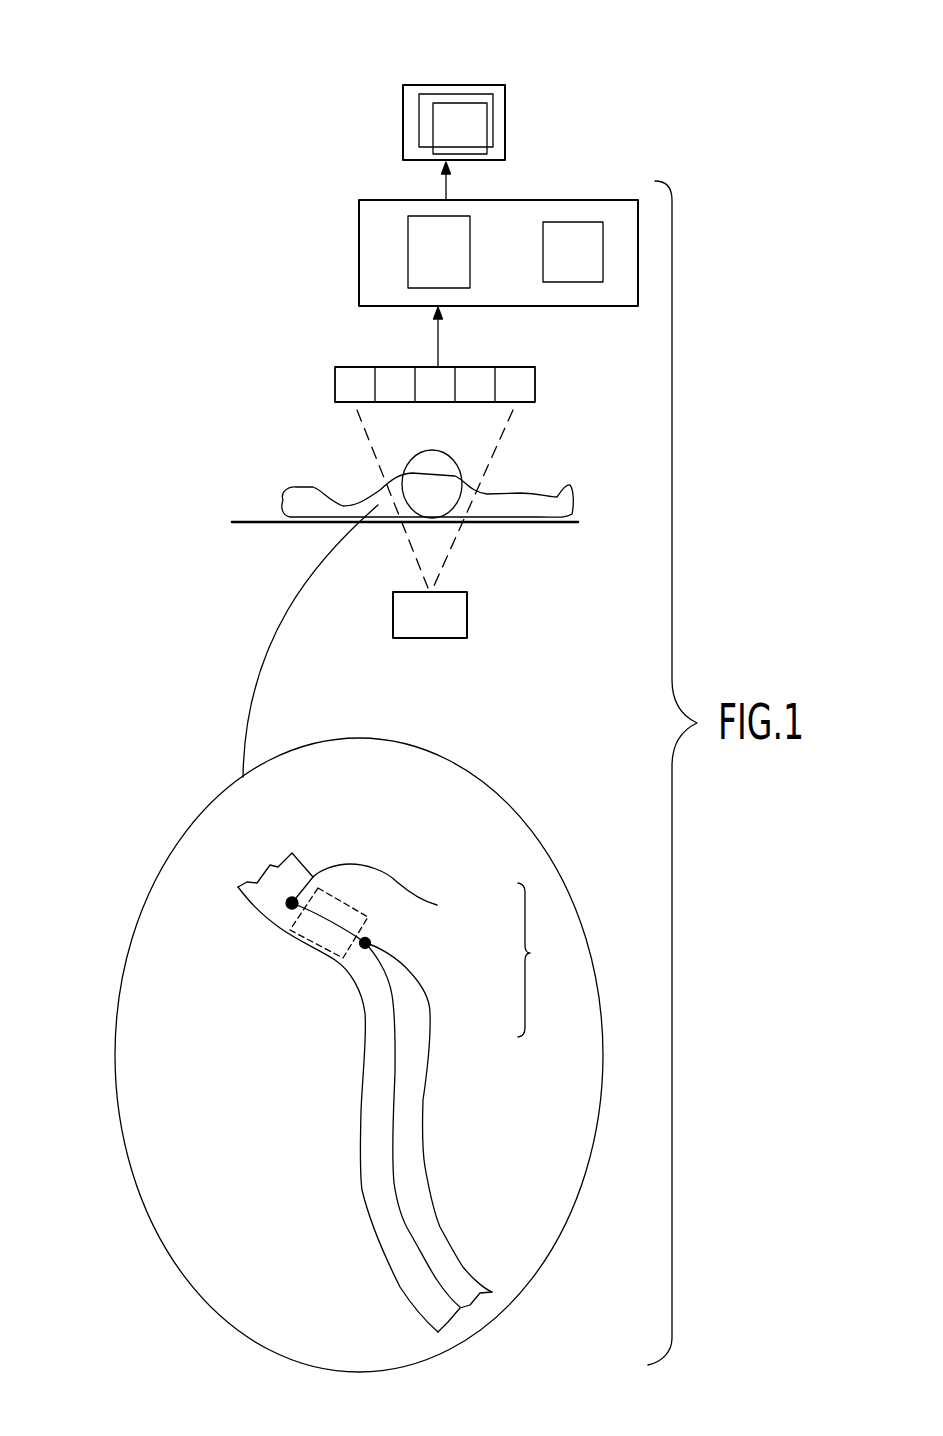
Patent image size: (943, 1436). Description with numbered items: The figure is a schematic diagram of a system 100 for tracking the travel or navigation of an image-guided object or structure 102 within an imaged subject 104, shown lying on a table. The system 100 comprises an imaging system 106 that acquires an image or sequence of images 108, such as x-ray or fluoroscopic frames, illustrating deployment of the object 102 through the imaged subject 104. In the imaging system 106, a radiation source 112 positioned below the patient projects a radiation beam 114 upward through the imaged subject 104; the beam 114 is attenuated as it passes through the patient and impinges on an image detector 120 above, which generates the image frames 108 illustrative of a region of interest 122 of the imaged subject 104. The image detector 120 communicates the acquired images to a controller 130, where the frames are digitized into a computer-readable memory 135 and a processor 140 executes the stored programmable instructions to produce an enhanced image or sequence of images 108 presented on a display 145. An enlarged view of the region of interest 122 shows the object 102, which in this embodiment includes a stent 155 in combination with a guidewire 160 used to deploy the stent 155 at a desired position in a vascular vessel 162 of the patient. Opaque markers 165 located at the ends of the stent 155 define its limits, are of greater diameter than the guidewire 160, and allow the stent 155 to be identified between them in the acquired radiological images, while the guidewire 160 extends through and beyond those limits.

The system 100 is at (158, 130).
The image-guided object or structure 102 is at (530, 953).
The imaged subject 104 is at (258, 486).
The imaging system 106 is at (298, 176).
The image or sequence of images 108 is at (480, 82).
The radiation source 112 is at (455, 640).
The radiation beam 114 is at (455, 532).
The image detector 120 is at (535, 388).
The region of interest 122 is at (172, 860).
The controller 130 is at (358, 270).
The computer-readable memory 135 is at (472, 239).
The processor 140 is at (596, 222).
The display 145 is at (507, 106).
The stent 155 is at (368, 937).
The guidewire 160 is at (393, 1072).
The vascular vessel 162 is at (442, 1139).
The marker 165 is at (437, 905).